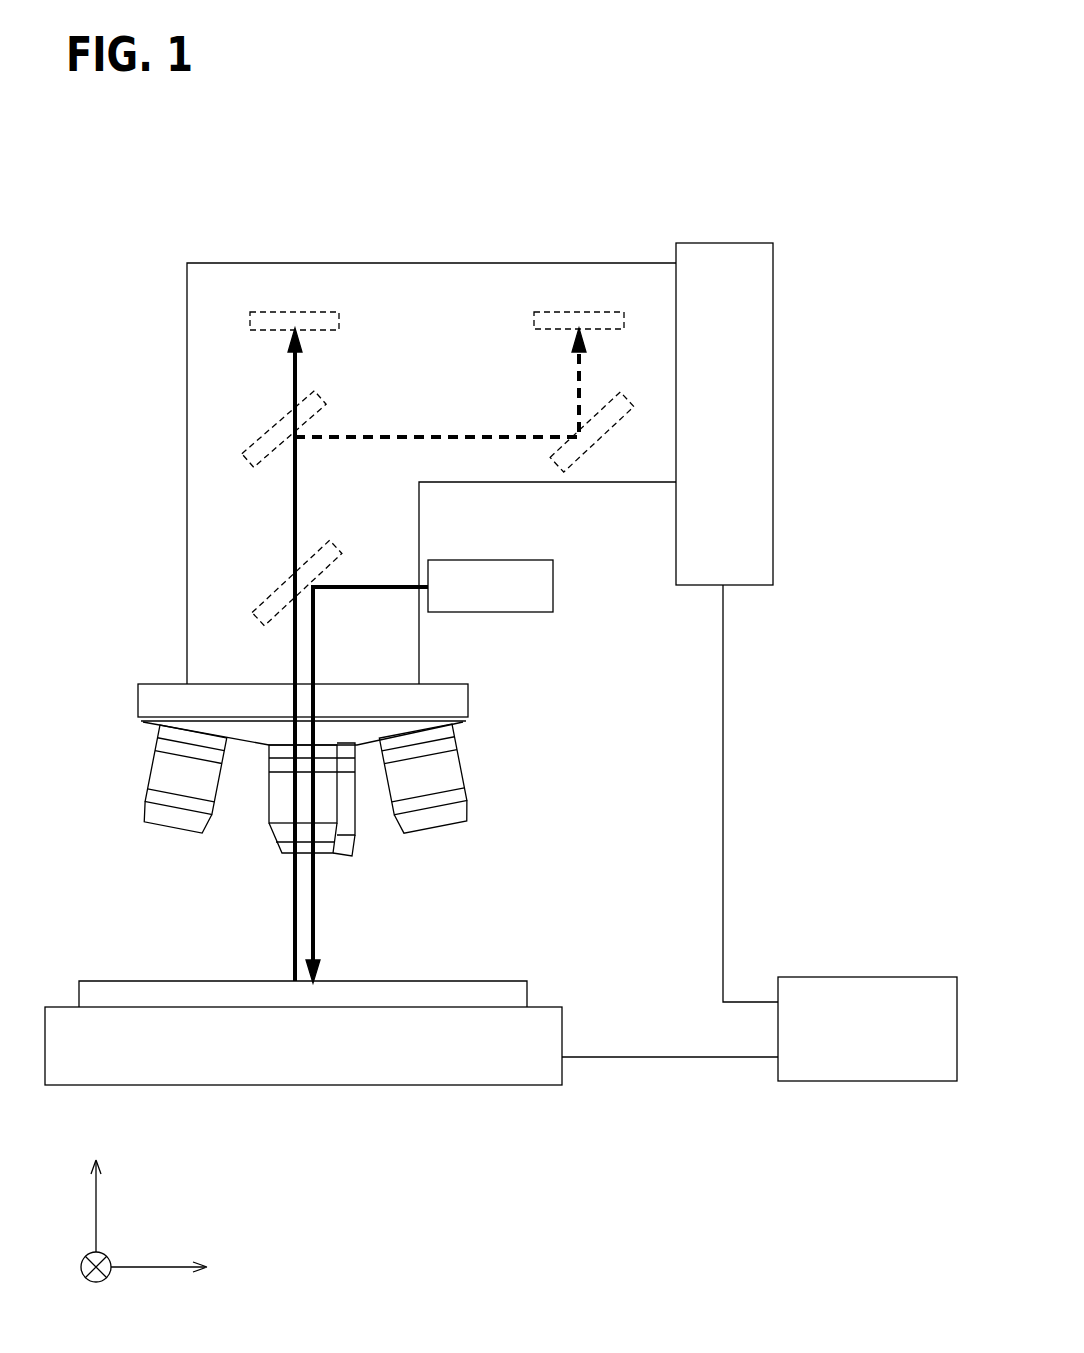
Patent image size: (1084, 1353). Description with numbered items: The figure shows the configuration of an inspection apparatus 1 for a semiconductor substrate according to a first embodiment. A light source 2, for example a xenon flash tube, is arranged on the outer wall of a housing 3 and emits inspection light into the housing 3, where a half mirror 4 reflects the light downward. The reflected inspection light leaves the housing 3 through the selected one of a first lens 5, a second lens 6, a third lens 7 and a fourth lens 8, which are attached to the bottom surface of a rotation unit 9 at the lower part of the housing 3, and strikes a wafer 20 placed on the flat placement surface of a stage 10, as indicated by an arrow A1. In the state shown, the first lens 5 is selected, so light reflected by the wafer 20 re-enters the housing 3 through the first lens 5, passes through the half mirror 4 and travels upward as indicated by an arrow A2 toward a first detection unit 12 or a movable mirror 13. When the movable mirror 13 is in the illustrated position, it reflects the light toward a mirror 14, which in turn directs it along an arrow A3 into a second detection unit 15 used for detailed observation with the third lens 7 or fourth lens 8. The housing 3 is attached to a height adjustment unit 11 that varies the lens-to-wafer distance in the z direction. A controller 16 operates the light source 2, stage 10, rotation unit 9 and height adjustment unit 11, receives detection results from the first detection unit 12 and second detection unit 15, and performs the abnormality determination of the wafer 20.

The inspection apparatus 1 is at (729, 185).
The light source 2 is at (519, 573).
The housing 3 is at (617, 263).
The half mirror 4 is at (339, 553).
The first lens 5 is at (281, 832).
The second lens 6 is at (160, 811).
The third lens 7 is at (342, 843).
The fourth lens 8 is at (456, 826).
The rotation unit 9 is at (156, 692).
The stage 10 is at (547, 1011).
The height adjustment unit 11 is at (760, 356).
The first detection unit 12 is at (297, 318).
The movable mirror 13 is at (303, 410).
The mirror 14 is at (592, 450).
The second detection unit 15 is at (591, 318).
The controller 16 is at (904, 977).
The wafer 20 is at (494, 986).
The arrow A1 is at (315, 640).
The arrow A2 is at (293, 524).
The arrow A3 is at (439, 437).